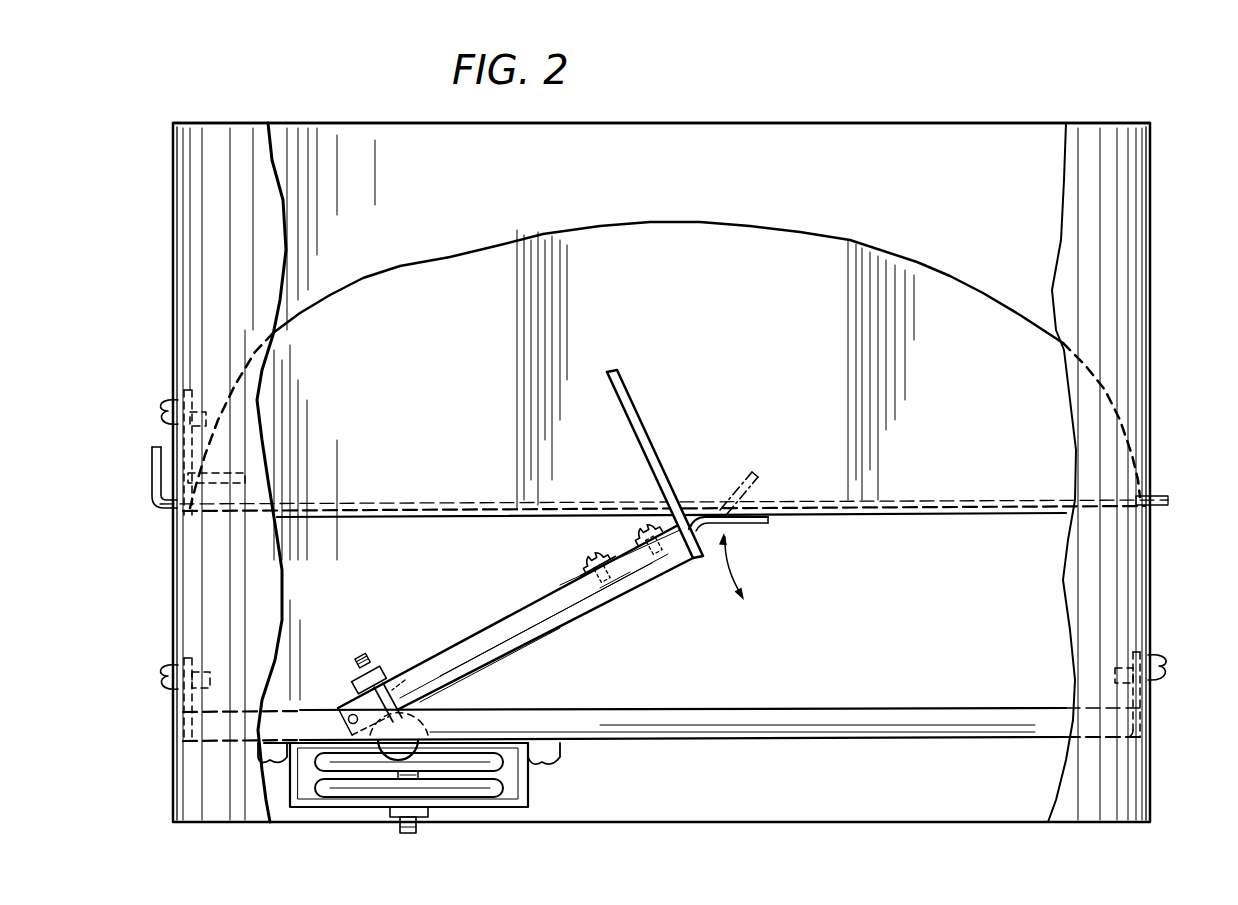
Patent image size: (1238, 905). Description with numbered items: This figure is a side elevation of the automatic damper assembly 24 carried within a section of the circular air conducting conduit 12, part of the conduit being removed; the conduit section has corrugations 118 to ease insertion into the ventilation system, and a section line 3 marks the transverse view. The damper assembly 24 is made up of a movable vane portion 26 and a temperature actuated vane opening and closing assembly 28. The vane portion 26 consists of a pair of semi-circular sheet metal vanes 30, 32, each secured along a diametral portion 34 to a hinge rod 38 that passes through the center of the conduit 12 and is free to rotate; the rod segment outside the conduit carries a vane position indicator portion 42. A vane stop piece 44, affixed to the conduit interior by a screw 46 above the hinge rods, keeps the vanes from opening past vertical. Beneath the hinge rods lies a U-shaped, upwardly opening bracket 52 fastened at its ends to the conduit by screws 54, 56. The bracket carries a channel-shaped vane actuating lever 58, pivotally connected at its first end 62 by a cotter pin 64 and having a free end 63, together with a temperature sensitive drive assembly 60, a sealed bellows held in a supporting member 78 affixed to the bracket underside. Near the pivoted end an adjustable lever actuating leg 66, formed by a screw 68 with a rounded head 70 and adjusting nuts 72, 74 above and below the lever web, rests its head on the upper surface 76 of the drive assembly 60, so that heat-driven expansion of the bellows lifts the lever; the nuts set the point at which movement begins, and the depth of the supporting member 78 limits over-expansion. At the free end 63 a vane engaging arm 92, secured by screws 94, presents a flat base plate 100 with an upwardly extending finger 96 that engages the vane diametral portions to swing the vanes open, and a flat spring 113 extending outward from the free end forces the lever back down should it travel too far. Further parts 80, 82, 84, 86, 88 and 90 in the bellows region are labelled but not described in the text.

The section line 3- 3 is at (644, 534).
The air conducting conduit 12 is at (1152, 246).
The automatic damper assembly 24 is at (1156, 474).
The movable vane portion 26 is at (668, 278).
The temperature actuated vane opening and closing assembly 28 is at (545, 686).
The movable vane 30 is at (362, 276).
The movable vane 32 is at (756, 368).
The diametral portion 34 is at (462, 518).
The hinge rod 38 is at (350, 518).
The vane position indicator portion 42 is at (151, 478).
The vane stop piece 44 is at (185, 397).
The screw 46 is at (168, 415).
The U-shaped bracket 52 is at (937, 708).
The screw 54 is at (165, 680).
The screw 56 is at (1160, 670).
The vane actuating lever 58 is at (516, 625).
The temperature sensitive drive assembly 60 is at (530, 786).
The first end 62 is at (356, 679).
The free end 63 is at (690, 562).
The cotter pin 64 is at (343, 712).
The adjustable lever actuating leg 66 is at (414, 722).
The screw 68 is at (361, 659).
The rounded head 70 is at (430, 730).
The adjusting nut 72 is at (406, 680).
The adjusting nut 74 is at (380, 676).
The upper surface 76 is at (489, 779).
The supporting member 78 is at (503, 808).
The left clip 80 is at (262, 762).
The right clip 82 is at (556, 750).
The upper roller 84 is at (320, 800).
The lower roller 86 is at (352, 800).
The nut 88 is at (405, 835).
The bolt 90 is at (424, 832).
The vane engaging arm 92 is at (655, 464).
The screws 94 is at (632, 527).
The finger 96 is at (634, 431).
The flat base plate 100 is at (648, 572).
The flat spring 113 is at (756, 473).
The corrugations 118 is at (661, 103).